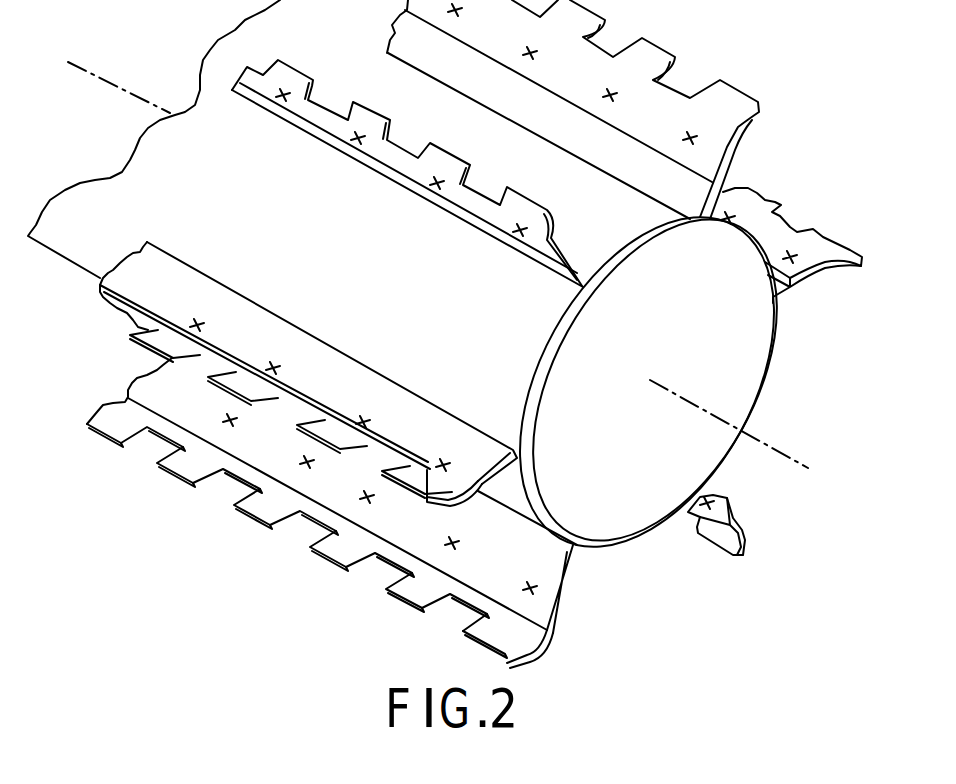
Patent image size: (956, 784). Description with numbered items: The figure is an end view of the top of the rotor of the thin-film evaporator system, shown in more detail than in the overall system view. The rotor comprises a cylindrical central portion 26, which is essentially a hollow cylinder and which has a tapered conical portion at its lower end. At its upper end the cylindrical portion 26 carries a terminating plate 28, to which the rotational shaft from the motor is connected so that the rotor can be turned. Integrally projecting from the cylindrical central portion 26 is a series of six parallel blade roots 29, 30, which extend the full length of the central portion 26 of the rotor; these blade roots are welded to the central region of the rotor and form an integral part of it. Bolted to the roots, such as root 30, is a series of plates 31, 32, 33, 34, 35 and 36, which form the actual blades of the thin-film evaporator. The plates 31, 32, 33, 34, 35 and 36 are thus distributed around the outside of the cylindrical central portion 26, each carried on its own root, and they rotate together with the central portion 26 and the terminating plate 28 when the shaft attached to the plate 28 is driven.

The cylindrical central portion 26 is at (137, 183).
The terminating plate 28 is at (683, 331).
The blade root 29 is at (357, 513).
The blade root 30 is at (790, 292).
The plate 31 is at (417, 478).
The plate 32 is at (763, 203).
The plate 33 is at (450, 163).
The plate 34 is at (747, 537).
The plate 35 is at (722, 90).
The plate 36 is at (460, 610).